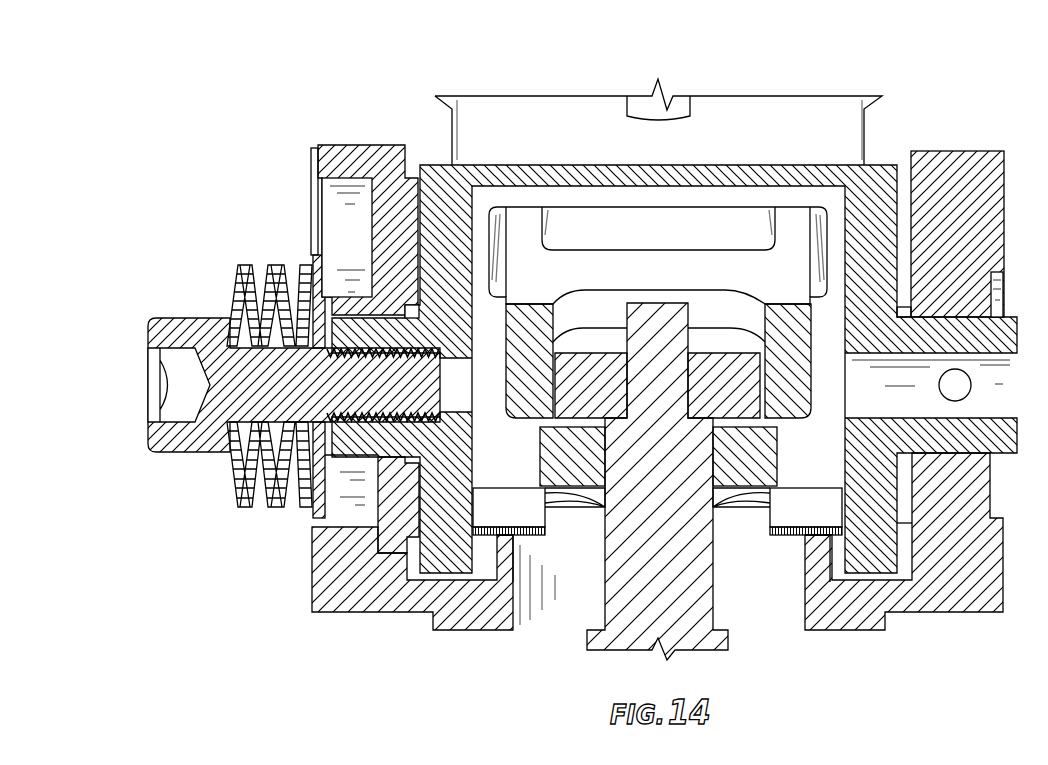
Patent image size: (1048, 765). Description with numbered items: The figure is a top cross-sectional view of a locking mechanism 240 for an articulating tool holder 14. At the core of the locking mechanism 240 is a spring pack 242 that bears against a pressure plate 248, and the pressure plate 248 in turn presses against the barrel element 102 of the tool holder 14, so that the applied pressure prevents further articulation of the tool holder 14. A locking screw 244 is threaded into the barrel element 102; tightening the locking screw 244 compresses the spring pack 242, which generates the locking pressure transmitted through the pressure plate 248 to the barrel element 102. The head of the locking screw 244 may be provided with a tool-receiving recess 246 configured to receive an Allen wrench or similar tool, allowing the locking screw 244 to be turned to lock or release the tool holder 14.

The tool holder 14 is at (872, 130).
The barrel element 102 is at (893, 163).
The locking mechanism 240 is at (245, 510).
The spring pack 242 is at (270, 262).
The locking screw 244 is at (242, 346).
The drive socket 246 is at (160, 383).
The pressure plate 248 is at (340, 145).